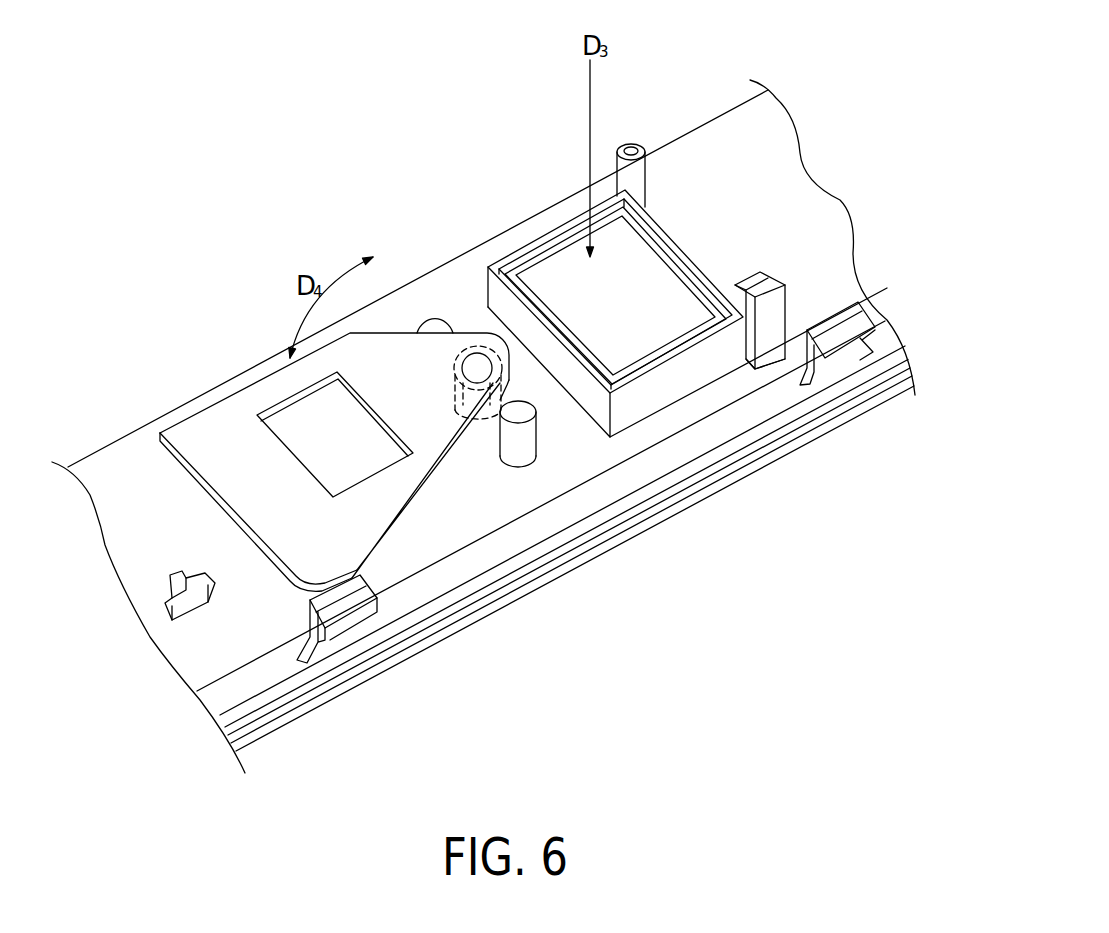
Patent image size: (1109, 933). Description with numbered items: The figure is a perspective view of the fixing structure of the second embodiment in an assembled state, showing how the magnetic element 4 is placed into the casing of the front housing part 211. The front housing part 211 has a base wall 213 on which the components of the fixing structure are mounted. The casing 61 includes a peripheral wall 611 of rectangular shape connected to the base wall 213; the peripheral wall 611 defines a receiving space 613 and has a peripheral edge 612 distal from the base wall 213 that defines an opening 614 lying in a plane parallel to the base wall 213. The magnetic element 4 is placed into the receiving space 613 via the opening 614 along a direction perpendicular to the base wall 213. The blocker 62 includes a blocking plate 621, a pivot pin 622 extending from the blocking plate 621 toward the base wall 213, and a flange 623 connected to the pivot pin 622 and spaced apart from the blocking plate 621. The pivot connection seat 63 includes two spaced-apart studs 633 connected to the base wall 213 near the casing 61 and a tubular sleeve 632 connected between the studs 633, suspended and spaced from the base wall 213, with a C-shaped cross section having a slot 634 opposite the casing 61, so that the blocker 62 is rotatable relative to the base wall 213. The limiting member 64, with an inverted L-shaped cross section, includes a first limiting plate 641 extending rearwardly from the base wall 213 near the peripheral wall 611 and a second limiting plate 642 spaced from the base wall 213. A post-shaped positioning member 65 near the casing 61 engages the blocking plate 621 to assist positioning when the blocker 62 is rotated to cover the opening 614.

The magnetic element 4 is at (650, 370).
The front housing part 211 is at (733, 108).
The base wall 213 is at (785, 147).
The casing 61 is at (558, 227).
The peripheral wall 611 is at (687, 378).
The peripheral edge 612 is at (687, 247).
The receiving space 613 is at (537, 262).
The opening 614 is at (650, 235).
The positioning member 65 is at (630, 140).
The blocker 62 is at (270, 368).
The blocking plate 621 is at (210, 428).
The pivot pin 622 is at (457, 353).
The flange 623 is at (447, 423).
The tubular sleeve 632 is at (485, 413).
The studs 633 is at (513, 453).
The slot 634 is at (452, 390).
The pivot connection seat 63 is at (540, 439).
The limiting member 64 is at (773, 367).
The first limiting plate 641 is at (777, 317).
The second limiting plate 642 is at (760, 278).